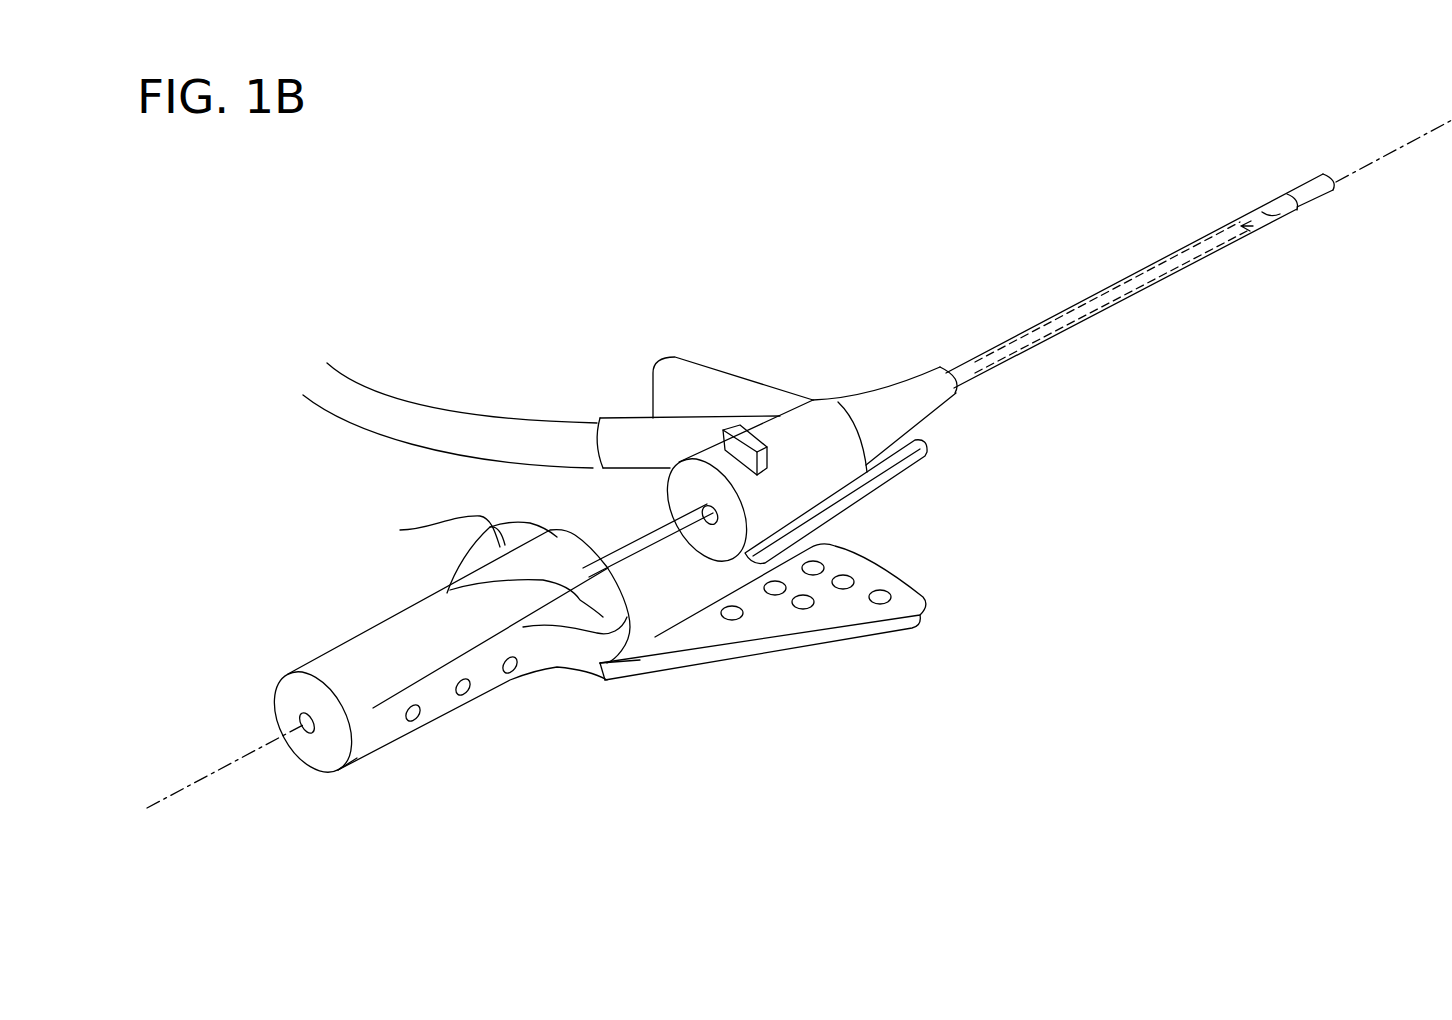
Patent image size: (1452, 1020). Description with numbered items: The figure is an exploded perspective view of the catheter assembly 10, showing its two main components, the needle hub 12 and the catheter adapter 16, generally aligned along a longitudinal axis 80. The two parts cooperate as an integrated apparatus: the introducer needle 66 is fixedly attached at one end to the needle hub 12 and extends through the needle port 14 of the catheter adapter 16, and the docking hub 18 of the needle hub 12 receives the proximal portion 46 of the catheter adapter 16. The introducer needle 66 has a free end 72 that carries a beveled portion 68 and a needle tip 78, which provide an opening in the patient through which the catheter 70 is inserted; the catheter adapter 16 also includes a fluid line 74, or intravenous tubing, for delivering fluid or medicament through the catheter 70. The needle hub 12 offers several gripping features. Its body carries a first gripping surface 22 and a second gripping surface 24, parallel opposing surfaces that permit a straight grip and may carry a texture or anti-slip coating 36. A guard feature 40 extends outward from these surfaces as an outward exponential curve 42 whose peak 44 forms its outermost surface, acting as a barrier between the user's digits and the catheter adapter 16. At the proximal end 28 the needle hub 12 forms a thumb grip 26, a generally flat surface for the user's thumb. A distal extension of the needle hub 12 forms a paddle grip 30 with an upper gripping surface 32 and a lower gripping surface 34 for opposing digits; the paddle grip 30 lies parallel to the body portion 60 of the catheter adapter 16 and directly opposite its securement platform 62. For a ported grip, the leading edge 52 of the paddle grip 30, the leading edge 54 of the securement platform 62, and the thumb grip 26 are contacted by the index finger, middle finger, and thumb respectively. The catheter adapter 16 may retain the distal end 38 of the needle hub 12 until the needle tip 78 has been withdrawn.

The catheter assembly 10 is at (1258, 718).
The needle hub 12 is at (448, 727).
The needle port 14 is at (708, 560).
The catheter adapter 16 is at (838, 385).
The docking hub 18 is at (568, 540).
The first gripping surface 22 is at (333, 650).
The second gripping surface 24 is at (483, 675).
The thumb grip 26 is at (300, 725).
The proximal end 28 is at (358, 760).
The paddle grip 30 is at (920, 588).
The upper gripping surface 32 is at (883, 573).
The lower gripping surface 34 is at (900, 628).
The texture or anti-slip coating 36 is at (313, 757).
The distal end 38 is at (633, 557).
The guard feature 40 is at (483, 525).
The exponential curve 42 is at (555, 652).
The peak 44 is at (400, 530).
The proximal portion 46 is at (677, 488).
The leading edge 52 is at (865, 573).
The leading edge 54 is at (760, 395).
The body portion 60 is at (793, 470).
The securement platform 62 is at (668, 358).
The introducer needle 66 is at (628, 552).
The beveled portion 68 is at (1232, 225).
The catheter 70 is at (1275, 210).
The free end 72 is at (1100, 285).
The fluid line 74 is at (362, 402).
The needle tip 78 is at (1268, 220).
The longitudinal axis 80 is at (197, 782).